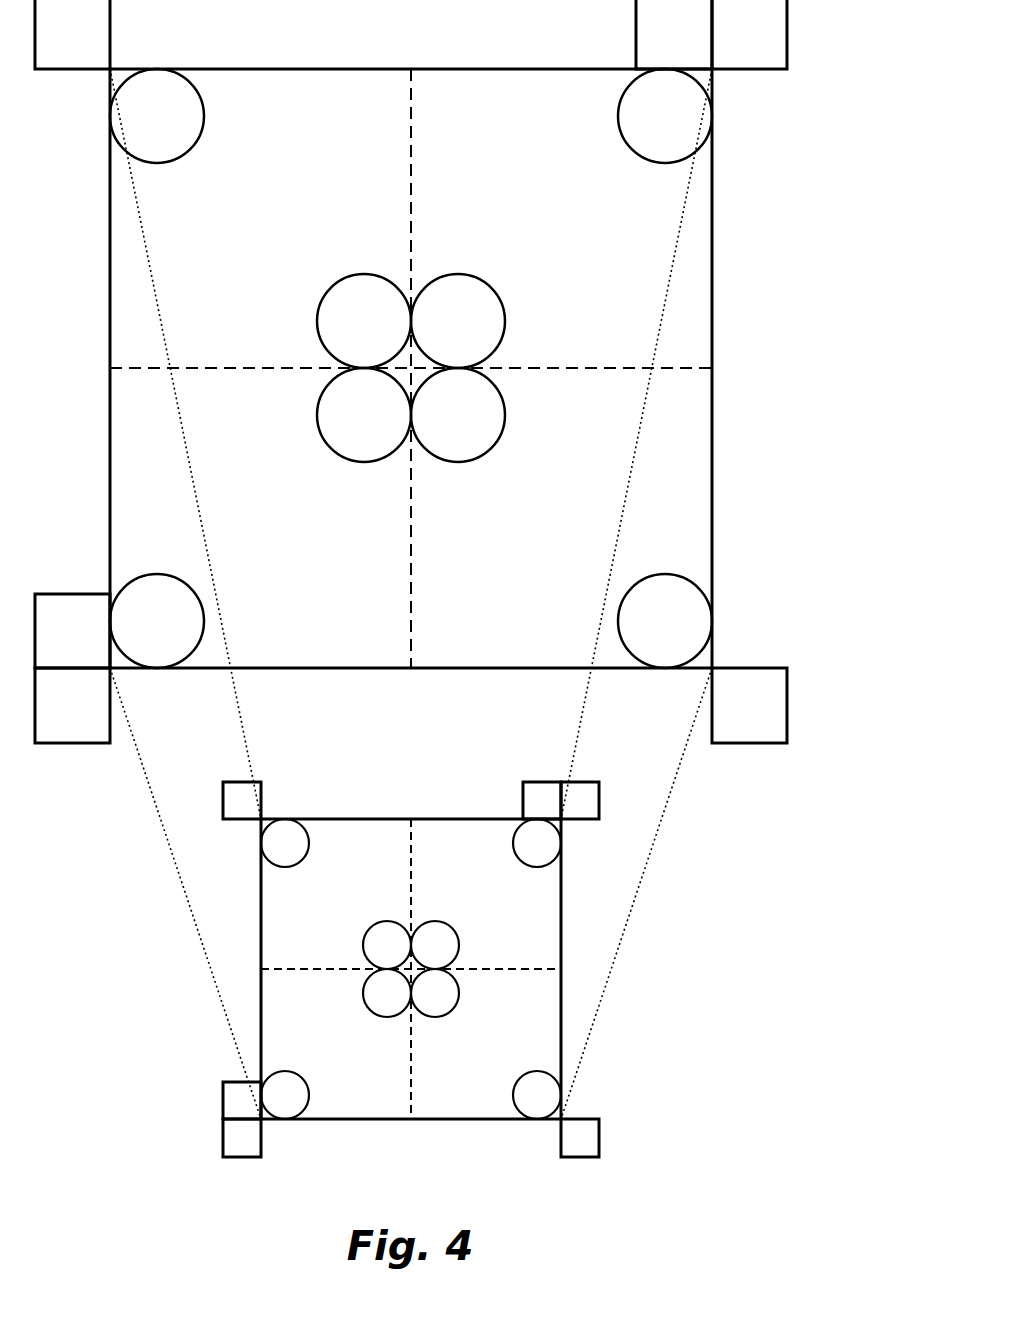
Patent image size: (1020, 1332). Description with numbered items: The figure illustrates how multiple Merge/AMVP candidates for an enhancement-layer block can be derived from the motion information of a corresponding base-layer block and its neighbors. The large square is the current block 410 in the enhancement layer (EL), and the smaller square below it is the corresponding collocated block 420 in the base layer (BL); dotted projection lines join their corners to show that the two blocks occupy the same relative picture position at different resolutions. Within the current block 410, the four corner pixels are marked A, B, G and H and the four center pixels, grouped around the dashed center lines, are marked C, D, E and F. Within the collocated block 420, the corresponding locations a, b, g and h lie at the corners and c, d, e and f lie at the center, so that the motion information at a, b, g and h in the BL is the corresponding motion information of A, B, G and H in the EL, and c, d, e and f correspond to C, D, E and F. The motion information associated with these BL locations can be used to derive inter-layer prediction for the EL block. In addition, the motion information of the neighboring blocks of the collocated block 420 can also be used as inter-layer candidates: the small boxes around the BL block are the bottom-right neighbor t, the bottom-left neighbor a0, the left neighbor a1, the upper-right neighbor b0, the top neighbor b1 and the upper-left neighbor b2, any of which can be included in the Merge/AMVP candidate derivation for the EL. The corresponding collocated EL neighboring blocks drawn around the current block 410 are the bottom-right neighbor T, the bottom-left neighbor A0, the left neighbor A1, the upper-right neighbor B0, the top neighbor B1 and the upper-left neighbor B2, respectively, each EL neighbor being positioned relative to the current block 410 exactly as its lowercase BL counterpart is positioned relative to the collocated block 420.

The current block in the EL 410 is at (464, 371).
The corresponding block in the BL 420 is at (514, 969).
The corner pixel of the current block in the EL A is at (157, 116).
The corner pixel of the current block in the EL B is at (665, 116).
The center pixel of the current block in the EL C is at (364, 321).
The center pixel of the current block in the EL D is at (458, 321).
The center pixel of the current block in the EL E is at (364, 415).
The center pixel of the current block in the EL F is at (458, 415).
The corner pixel of the current block in the EL G is at (157, 621).
The corner pixel of the current block in the EL H is at (665, 621).
The upper-left neighboring EL block B2 is at (72, 34).
The top neighboring EL block B1 is at (674, 34).
The upper-right neighboring EL block B0 is at (749, 34).
The left neighboring EL block A1 is at (72, 631).
The bottom-left neighboring EL block A0 is at (72, 705).
The bottom-right neighboring EL block T is at (749, 705).
The motion information location in the collocated BL block a is at (285, 843).
The motion information location in the collocated BL block b is at (537, 843).
The motion information location in the collocated BL block c is at (387, 945).
The motion information location in the collocated BL block d is at (435, 945).
The motion information location in the collocated BL block e is at (387, 993).
The motion information location in the collocated BL block f is at (435, 993).
The motion information location in the collocated BL block g is at (285, 1095).
The motion information location in the collocated BL block h is at (537, 1095).
The upper-left neighboring BL block b2 is at (242, 800).
The top neighboring BL block b1 is at (542, 800).
The upper-right neighboring BL block b0 is at (580, 800).
The left neighboring BL block a1 is at (242, 1100).
The bottom-left neighboring BL block a0 is at (242, 1138).
The bottom-right neighboring BL block t is at (580, 1138).